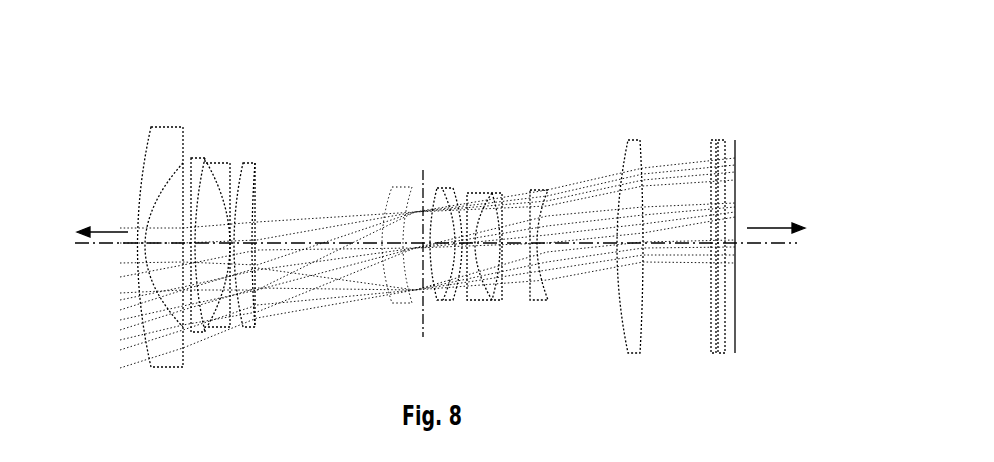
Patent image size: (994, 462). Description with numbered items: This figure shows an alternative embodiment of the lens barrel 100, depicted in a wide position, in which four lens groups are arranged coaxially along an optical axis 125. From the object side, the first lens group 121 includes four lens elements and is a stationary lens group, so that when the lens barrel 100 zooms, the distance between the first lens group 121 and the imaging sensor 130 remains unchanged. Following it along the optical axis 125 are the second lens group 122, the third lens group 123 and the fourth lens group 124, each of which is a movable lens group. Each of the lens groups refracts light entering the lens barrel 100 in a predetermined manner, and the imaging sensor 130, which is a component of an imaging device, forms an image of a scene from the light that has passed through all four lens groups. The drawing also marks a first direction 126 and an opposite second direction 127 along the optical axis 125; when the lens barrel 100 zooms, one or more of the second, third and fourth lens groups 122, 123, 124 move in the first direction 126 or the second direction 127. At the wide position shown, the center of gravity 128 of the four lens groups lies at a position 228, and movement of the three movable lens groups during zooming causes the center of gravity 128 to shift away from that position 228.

The lens barrel 100 is at (865, 32).
The first lens group 121 is at (143, 117).
The second lens group 122 is at (382, 147).
The third lens group 123 is at (668, 118).
The fourth lens group 124 is at (552, 147).
The optical axis 125 is at (760, 242).
The first direction 126 is at (102, 232).
The second direction 127 is at (768, 227).
The center of gravity 128 is at (425, 323).
The imaging sensor 130 is at (740, 122).
The position 228 is at (420, 250).